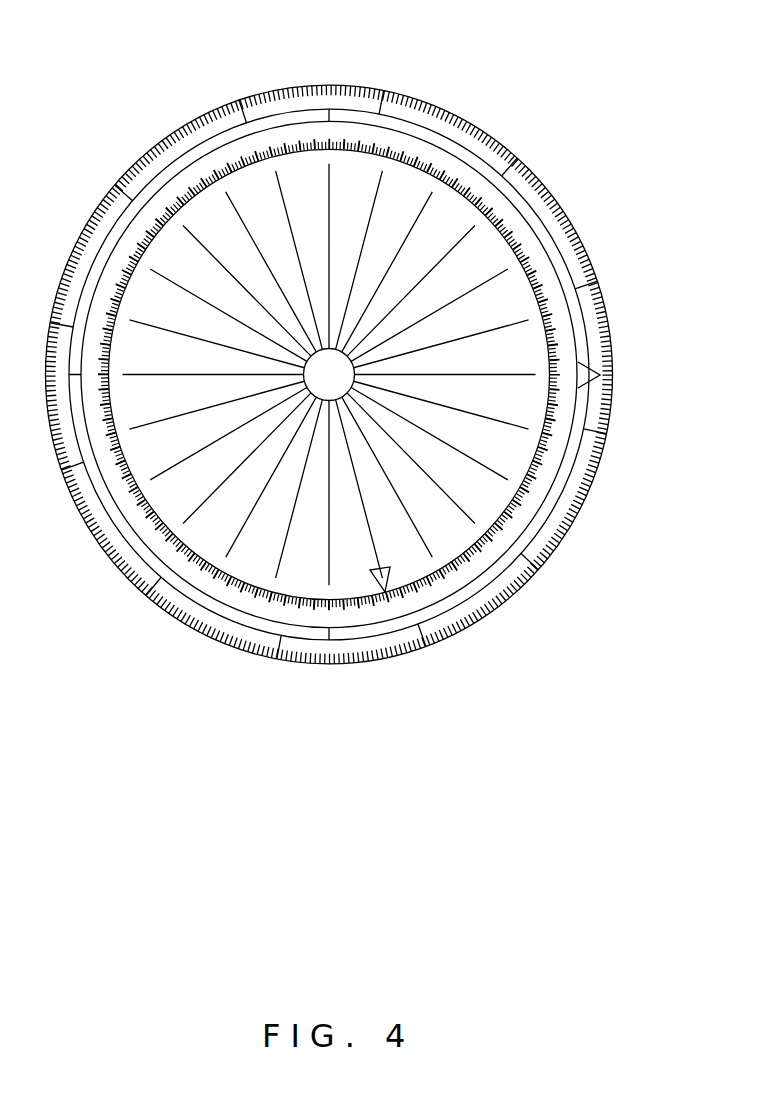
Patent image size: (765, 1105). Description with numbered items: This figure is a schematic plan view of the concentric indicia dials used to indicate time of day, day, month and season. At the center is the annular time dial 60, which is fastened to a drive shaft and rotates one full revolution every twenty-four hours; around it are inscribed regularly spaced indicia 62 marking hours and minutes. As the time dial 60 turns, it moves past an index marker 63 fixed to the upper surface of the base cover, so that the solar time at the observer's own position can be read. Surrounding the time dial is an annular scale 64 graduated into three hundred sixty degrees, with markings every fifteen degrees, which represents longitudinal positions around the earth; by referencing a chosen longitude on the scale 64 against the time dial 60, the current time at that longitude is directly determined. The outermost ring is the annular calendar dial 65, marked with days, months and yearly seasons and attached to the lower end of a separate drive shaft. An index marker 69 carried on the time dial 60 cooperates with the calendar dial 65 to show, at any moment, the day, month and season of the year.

The annular time dial 60 is at (355, 122).
The regularly spaced indicia 62 is at (264, 592).
The index marker 63 is at (392, 572).
The annular scale 64 is at (258, 192).
The annular calendar dial 65 is at (93, 532).
The index marker 69 is at (587, 378).